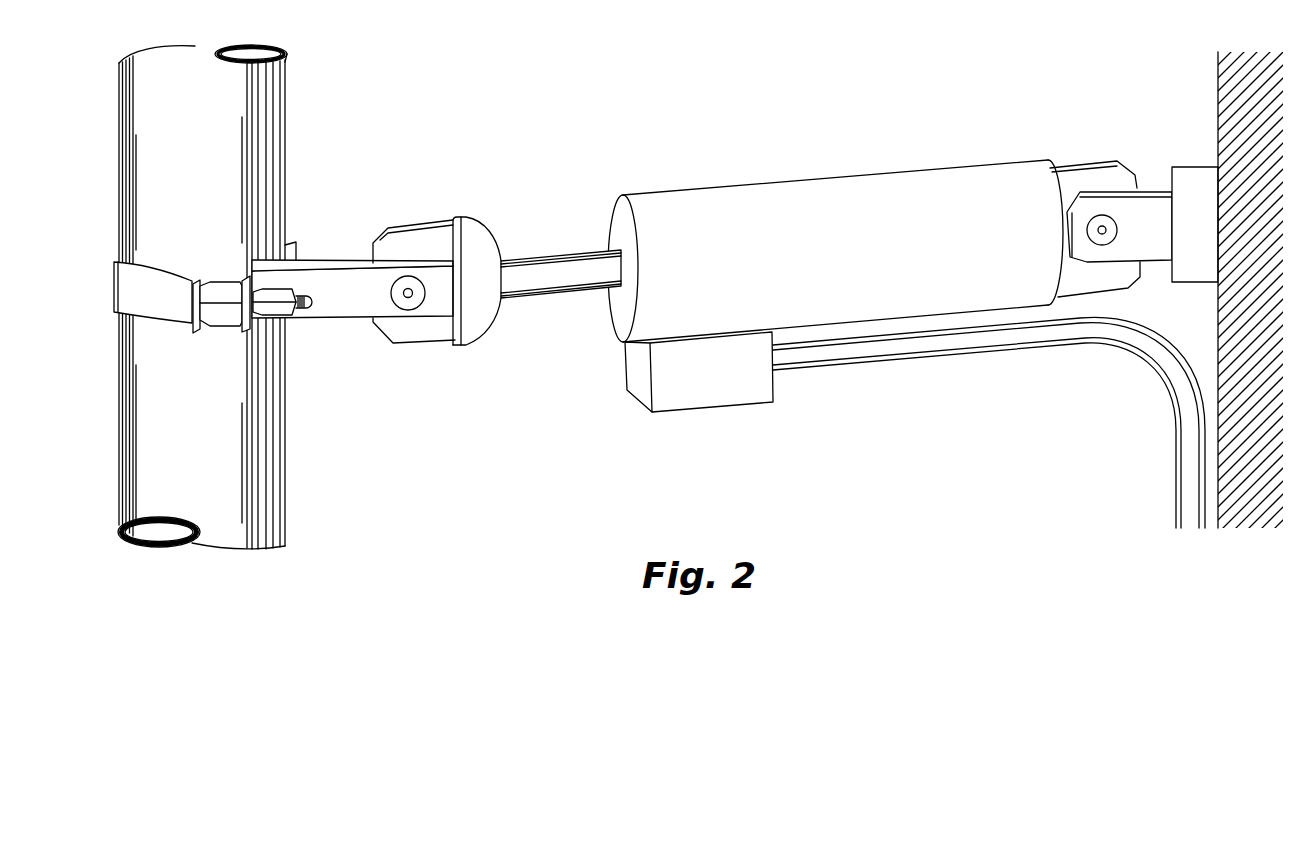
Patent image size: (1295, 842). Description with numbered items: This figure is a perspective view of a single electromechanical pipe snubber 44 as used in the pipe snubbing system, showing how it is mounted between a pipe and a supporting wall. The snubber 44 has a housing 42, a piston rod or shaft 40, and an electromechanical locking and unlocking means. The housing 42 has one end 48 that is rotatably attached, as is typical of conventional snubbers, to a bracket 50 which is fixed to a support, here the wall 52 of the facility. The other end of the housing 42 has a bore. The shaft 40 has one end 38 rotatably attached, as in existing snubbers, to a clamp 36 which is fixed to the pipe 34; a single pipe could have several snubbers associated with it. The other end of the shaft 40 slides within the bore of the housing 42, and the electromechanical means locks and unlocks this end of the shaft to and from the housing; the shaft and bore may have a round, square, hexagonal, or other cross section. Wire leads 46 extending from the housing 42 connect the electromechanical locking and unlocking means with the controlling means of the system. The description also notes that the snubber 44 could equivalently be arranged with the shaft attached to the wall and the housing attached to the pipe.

The pipe 34 is at (213, 163).
The clamp 36 is at (330, 306).
The shaft end 38 is at (420, 328).
The piston rod or shaft 40 is at (565, 272).
The housing 42 is at (735, 212).
The electromechanical pipe snubber 44 is at (859, 288).
The wire leads 46 is at (1168, 355).
The housing end 48 is at (1093, 178).
The bracket 50 is at (1202, 180).
The wall 52 is at (1230, 120).